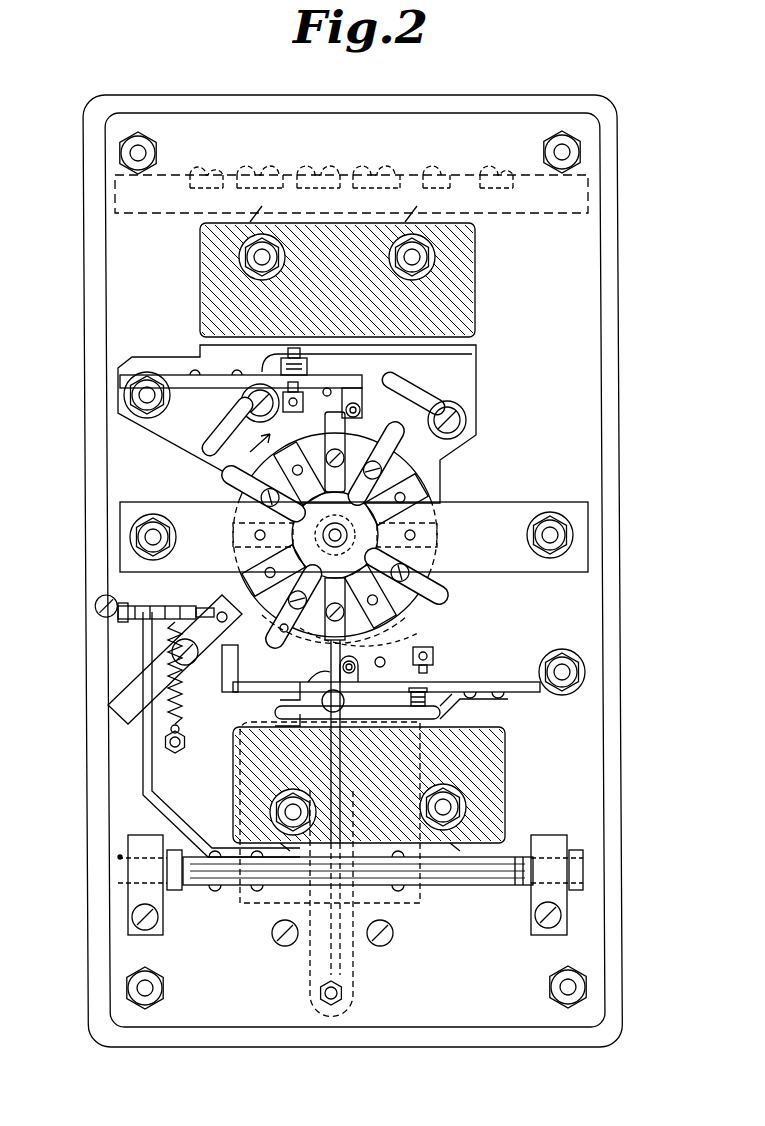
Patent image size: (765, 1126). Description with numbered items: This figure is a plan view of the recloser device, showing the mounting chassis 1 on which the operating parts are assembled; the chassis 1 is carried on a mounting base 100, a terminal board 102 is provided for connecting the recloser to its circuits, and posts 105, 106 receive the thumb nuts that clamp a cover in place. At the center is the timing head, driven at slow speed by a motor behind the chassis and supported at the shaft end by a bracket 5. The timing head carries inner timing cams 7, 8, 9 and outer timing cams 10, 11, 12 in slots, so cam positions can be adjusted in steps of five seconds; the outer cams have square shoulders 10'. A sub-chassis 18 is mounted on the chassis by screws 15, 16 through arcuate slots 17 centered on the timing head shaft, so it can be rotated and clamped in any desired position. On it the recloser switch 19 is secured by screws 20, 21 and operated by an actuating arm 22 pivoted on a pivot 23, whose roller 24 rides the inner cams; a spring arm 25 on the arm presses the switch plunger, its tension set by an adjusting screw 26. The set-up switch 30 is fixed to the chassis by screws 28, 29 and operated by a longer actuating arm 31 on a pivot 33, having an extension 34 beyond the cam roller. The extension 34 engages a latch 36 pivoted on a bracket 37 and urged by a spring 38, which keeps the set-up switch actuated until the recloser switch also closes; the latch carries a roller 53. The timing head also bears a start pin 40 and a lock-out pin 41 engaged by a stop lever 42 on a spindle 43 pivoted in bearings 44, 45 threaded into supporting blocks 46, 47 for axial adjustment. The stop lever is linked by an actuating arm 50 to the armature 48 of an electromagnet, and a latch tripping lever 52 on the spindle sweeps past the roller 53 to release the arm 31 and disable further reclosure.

The mounting chassis 1 is at (587, 258).
The mounting base 100 is at (612, 383).
The terminal board 102 is at (398, 172).
The bracket 5 is at (465, 512).
The inner timing cam 7 is at (328, 421).
The inner timing cam 8 is at (238, 483).
The inner timing cam 9 is at (284, 640).
The outer timing cam 10 is at (317, 776).
The square shoulders 10' is at (382, 645).
The outer timing cam 11 is at (434, 590).
The outer timing cam 12 is at (388, 446).
The screw 15 is at (456, 423).
The screw 16 is at (242, 403).
The arcuate slots 17 is at (450, 384).
The sub-chassis 18 is at (450, 365).
The recloser switch 19 is at (462, 289).
The screw 20 is at (412, 257).
The screw 21 is at (262, 257).
The actuating arm 22 is at (210, 373).
The pivot 23 is at (148, 390).
The roller 24 is at (360, 408).
The spring arm 25 is at (374, 359).
The adjusting screw 26 is at (268, 366).
The screw 28 is at (292, 812).
The screw 29 is at (446, 809).
The set-up switch 30 is at (503, 797).
The actuating arm 31 is at (457, 684).
The pivot 33 is at (585, 672).
The extension 34 is at (279, 699).
The latch 36 is at (229, 668).
The bracket 37 is at (213, 608).
The spring 38 is at (179, 713).
The start pin 40 is at (380, 640).
The lock-out pin 41 is at (280, 629).
The stop lever 42 is at (334, 682).
The spindle 43 is at (282, 873).
The bearing 44 is at (120, 857).
The bearing 45 is at (575, 873).
The supporting block 46 is at (137, 888).
The supporting block 47 is at (558, 896).
The armature 48 is at (398, 916).
The actuating arm 50 is at (321, 703).
The latch tripping lever 52 is at (143, 762).
The roller 53 is at (160, 596).
The post 105 is at (128, 537).
The post 106 is at (575, 535).